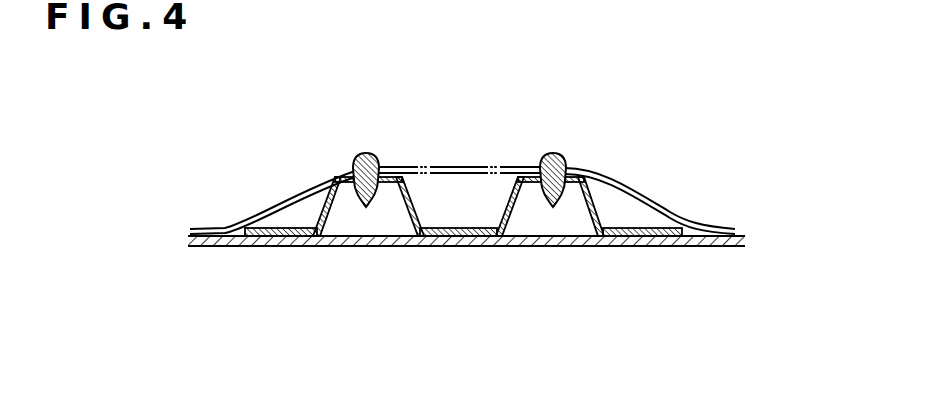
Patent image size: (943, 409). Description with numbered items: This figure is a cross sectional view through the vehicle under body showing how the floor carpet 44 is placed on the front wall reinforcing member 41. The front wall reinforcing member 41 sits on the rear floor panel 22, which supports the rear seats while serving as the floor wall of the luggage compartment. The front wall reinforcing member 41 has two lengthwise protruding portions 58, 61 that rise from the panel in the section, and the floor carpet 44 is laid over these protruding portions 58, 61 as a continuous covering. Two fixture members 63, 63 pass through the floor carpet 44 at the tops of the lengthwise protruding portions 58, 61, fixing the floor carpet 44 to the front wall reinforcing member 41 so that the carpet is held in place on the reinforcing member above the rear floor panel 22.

The rear floor panel 22 is at (388, 247).
The front wall reinforcing member 41 is at (656, 219).
The floor carpet 44 is at (455, 163).
The lengthwise protruding portion 58 is at (318, 212).
The lengthwise protruding portion 61 is at (598, 200).
The fixture member 63 is at (366, 154).